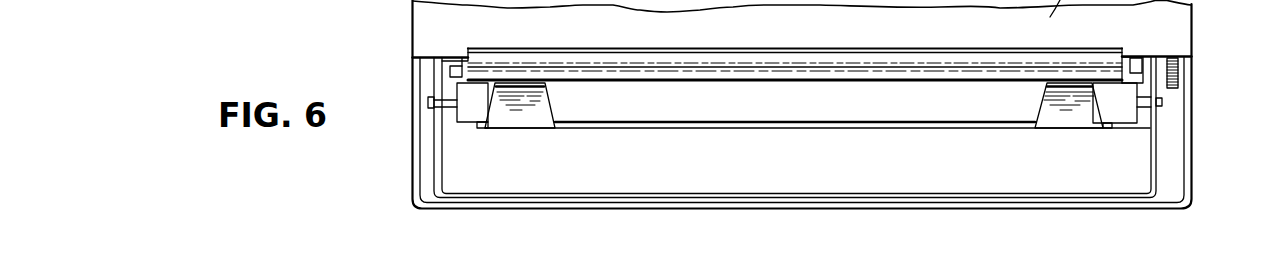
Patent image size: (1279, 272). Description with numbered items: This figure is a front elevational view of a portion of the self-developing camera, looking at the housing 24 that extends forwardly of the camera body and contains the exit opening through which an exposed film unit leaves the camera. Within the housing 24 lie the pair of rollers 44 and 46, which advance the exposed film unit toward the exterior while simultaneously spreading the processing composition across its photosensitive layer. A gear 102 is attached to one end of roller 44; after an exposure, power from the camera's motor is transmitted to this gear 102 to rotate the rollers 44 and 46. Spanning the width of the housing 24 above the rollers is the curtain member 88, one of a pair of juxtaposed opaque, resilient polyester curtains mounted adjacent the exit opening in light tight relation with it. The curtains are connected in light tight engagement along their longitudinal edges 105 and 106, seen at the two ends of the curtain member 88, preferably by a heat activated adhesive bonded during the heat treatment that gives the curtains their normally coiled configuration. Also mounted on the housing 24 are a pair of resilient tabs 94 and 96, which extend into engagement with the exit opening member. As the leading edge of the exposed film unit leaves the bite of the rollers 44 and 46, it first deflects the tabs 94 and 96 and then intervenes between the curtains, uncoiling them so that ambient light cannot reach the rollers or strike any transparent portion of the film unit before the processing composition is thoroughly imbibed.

The housing 24 is at (776, 215).
The roller 44 is at (448, 72).
The roller 46 is at (470, 119).
The curtain member 88 is at (940, 57).
The resilient tab 94 is at (533, 120).
The resilient tab 96 is at (1082, 120).
The gear 102 is at (1180, 64).
The longitudinal edge 105 is at (468, 50).
The longitudinal edge 106 is at (1123, 55).